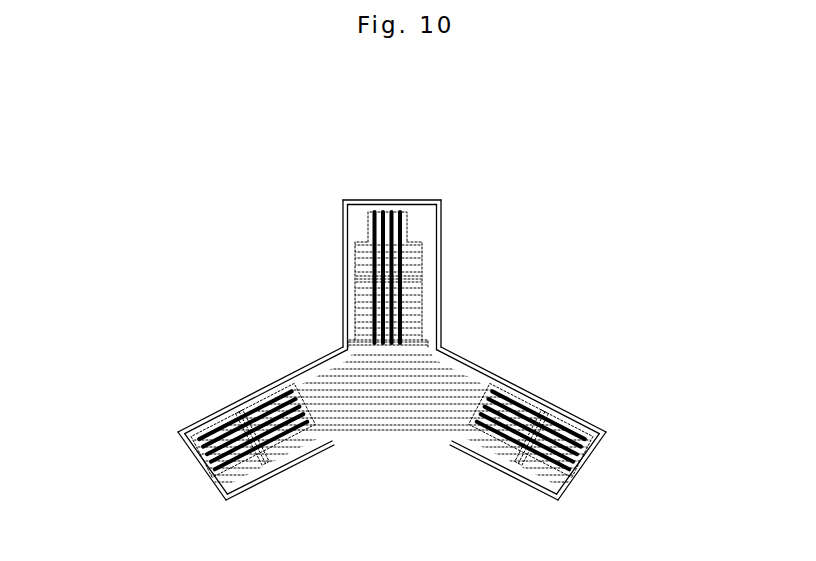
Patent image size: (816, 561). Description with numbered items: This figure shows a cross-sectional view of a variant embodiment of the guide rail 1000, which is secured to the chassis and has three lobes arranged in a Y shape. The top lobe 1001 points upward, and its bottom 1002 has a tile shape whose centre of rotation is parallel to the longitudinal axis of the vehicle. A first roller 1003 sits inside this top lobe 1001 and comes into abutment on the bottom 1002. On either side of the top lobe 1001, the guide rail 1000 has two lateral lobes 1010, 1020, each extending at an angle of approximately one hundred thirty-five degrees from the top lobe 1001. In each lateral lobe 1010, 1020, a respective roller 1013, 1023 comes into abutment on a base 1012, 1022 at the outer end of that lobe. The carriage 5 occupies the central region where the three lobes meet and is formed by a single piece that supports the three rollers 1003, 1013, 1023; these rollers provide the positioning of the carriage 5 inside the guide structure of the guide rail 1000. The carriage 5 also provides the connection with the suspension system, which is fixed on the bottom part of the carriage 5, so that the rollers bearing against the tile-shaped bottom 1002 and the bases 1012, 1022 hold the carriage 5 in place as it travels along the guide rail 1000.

The guide rail 1000 is at (408, 321).
The top lobe 1001 is at (510, 260).
The bottom of the top lobe 1002 is at (459, 157).
The first roller 1003 is at (488, 279).
The lateral lobe 1010 is at (622, 430).
The base of lateral lobe 1012 is at (674, 474).
The roller of lateral lobe 1013 is at (623, 430).
The lateral lobe 1020 is at (179, 412).
The base of lateral lobe 1022 is at (118, 466).
The roller of lateral lobe 1023 is at (181, 429).
The carriage 5 is at (395, 389).